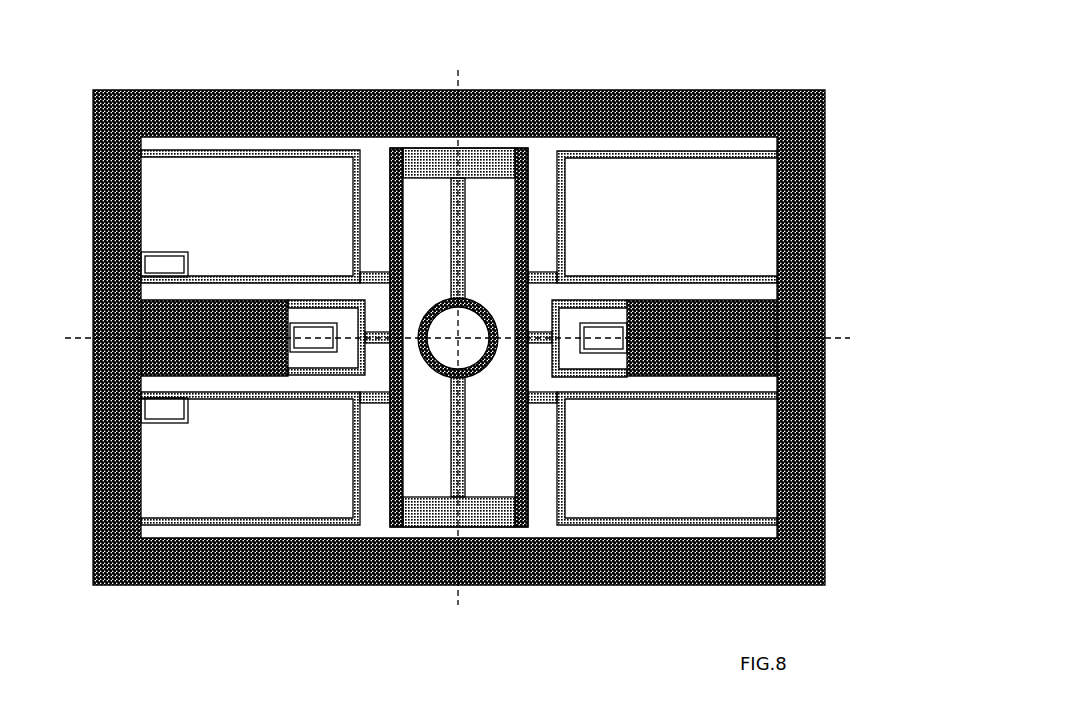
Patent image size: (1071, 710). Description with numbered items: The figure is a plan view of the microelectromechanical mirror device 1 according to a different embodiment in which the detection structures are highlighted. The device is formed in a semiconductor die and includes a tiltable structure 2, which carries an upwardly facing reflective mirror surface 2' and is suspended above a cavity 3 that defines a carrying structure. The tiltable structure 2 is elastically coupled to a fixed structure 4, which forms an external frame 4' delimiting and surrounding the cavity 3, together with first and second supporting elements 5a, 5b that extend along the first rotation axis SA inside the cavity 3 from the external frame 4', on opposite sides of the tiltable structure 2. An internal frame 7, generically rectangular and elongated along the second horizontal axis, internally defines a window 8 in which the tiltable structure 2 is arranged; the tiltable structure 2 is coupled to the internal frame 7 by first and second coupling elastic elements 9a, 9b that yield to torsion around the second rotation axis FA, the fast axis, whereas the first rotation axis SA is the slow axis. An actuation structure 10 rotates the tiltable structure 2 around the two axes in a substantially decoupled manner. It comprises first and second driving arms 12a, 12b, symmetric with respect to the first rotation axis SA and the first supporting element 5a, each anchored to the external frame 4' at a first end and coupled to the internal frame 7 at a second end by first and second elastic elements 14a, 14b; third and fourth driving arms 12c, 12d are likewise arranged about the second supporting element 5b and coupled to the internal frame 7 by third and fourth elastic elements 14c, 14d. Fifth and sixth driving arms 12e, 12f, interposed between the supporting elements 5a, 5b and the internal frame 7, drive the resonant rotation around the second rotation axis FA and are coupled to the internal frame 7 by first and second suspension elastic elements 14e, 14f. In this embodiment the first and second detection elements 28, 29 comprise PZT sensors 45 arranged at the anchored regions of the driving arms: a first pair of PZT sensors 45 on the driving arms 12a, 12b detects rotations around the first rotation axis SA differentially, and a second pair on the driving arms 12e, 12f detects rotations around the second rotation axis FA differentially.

The microelectromechanical mirror device 1 is at (848, 86).
The tiltable structure 2 is at (458, 355).
The reflective mirror surface 2' is at (458, 338).
The cavity 3 is at (215, 533).
The fixed structure 4 is at (491, 337).
The external frame 4' is at (801, 84).
The first supporting element 5a is at (250, 377).
The second supporting element 5b is at (740, 374).
The internal frame 7 is at (419, 147).
The window 8 is at (510, 203).
The first coupling elastic element 9a is at (466, 244).
The second coupling elastic element 9b is at (466, 446).
The actuation structure 10 is at (191, 143).
The first driving arm 12a is at (237, 156).
The second driving arm 12b is at (282, 524).
The third driving arm 12c is at (648, 150).
The fourth driving arm 12d is at (697, 521).
The fifth driving arm 12e is at (325, 376).
The sixth driving arm 12f is at (613, 378).
The first elastic element 14a is at (385, 271).
The second elastic element 14b is at (372, 404).
The third elastic element 14c is at (538, 272).
The fourth elastic element 14d is at (543, 404).
The first suspension elastic element 14e is at (373, 332).
The second suspension elastic element 14f is at (538, 331).
The first detection elements 28 is at (151, 398).
The second detection elements 29 is at (322, 320).
The PZT sensors 45 is at (305, 333).
The second rotation axis FA is at (456, 82).
The first rotation axis SA is at (833, 338).